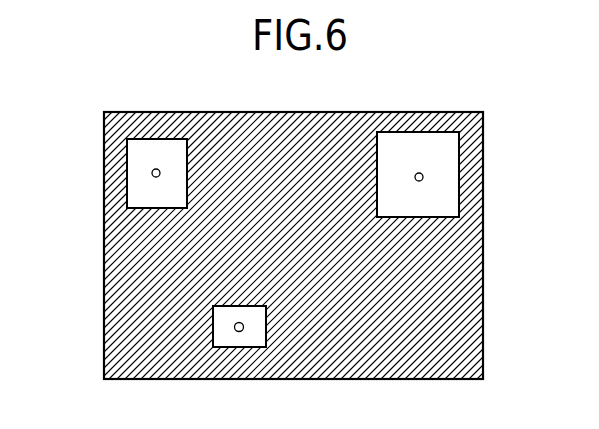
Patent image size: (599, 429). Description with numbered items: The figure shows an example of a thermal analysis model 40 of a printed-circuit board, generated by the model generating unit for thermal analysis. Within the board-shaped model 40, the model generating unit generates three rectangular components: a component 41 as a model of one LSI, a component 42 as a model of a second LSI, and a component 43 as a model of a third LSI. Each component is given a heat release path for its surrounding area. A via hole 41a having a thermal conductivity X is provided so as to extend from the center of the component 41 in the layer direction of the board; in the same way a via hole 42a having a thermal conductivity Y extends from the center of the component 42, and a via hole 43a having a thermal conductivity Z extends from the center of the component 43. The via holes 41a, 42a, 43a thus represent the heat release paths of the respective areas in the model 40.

The thermal analysis model 40 is at (407, 112).
The component 41 is at (167, 138).
The via hole 41a is at (152, 172).
The component 42 is at (462, 153).
The via hole 42a is at (423, 179).
The component 43 is at (268, 328).
The via hole 43a is at (239, 332).